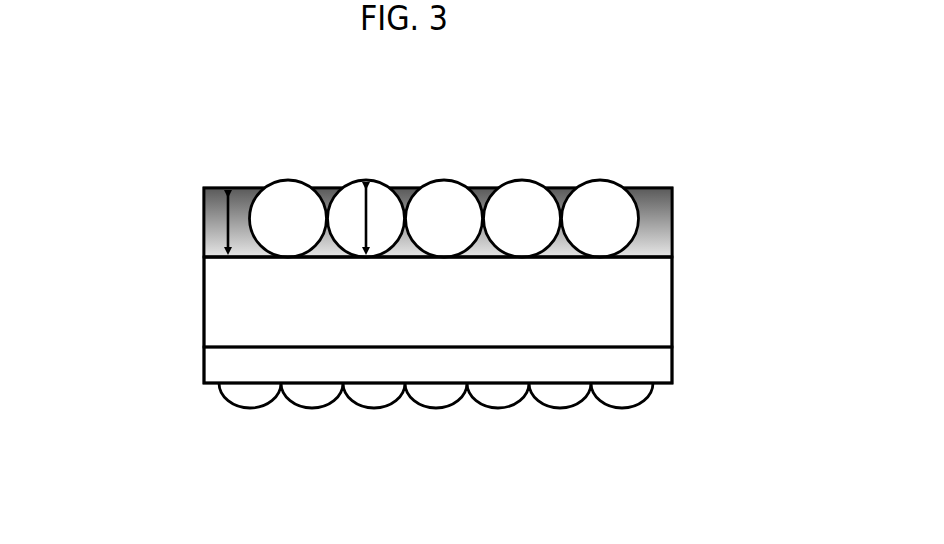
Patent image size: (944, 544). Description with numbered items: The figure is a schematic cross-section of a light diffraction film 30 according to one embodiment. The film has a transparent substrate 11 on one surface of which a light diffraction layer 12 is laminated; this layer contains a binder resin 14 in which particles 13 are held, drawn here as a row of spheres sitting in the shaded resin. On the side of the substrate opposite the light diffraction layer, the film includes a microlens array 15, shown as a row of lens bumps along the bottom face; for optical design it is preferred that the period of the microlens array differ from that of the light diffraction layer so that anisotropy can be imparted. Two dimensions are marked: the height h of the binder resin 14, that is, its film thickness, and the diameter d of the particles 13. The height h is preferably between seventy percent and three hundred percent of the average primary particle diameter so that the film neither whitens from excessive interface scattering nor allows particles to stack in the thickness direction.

The light diffraction film 30 is at (103, 180).
The light diffraction layer 12 is at (193, 180).
The particles 13 is at (605, 188).
The binder resin 14 is at (662, 225).
The transparent substrate 11 is at (660, 312).
The microlens array 15 is at (193, 333).
The height of the binder resin h is at (233, 205).
The particle diameter d is at (373, 222).